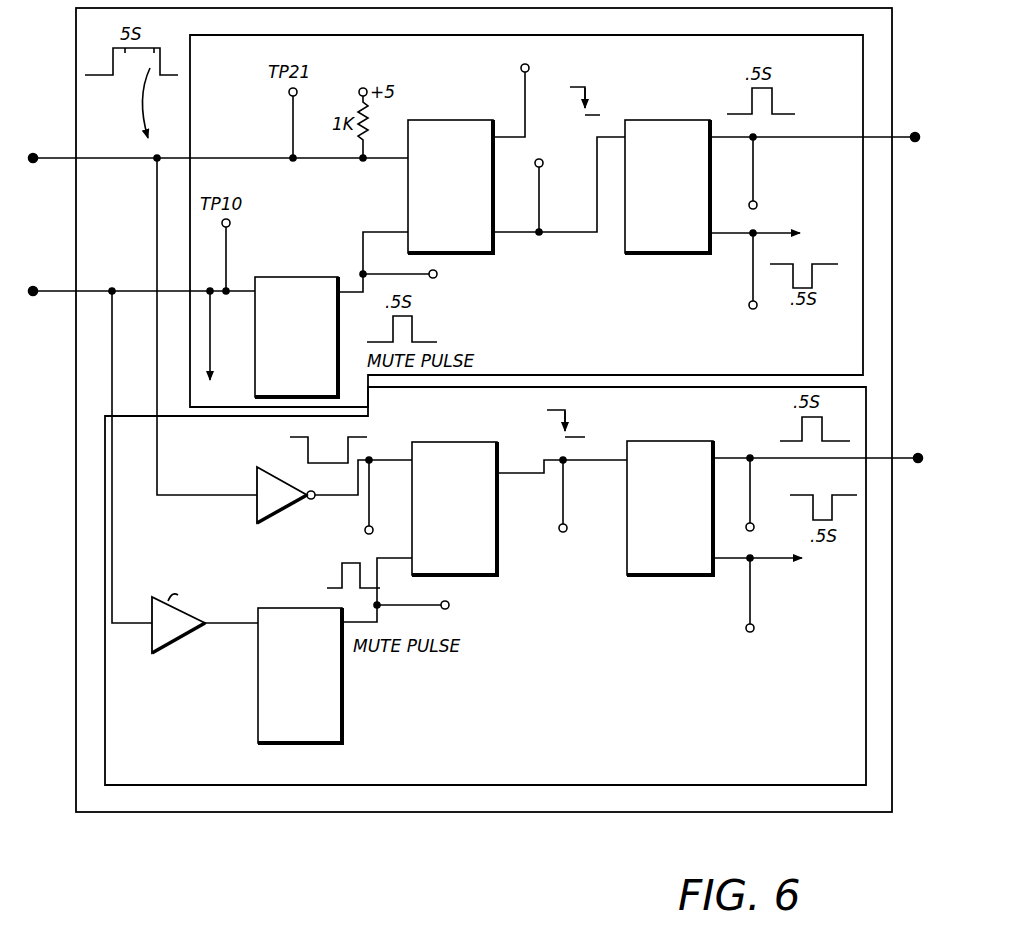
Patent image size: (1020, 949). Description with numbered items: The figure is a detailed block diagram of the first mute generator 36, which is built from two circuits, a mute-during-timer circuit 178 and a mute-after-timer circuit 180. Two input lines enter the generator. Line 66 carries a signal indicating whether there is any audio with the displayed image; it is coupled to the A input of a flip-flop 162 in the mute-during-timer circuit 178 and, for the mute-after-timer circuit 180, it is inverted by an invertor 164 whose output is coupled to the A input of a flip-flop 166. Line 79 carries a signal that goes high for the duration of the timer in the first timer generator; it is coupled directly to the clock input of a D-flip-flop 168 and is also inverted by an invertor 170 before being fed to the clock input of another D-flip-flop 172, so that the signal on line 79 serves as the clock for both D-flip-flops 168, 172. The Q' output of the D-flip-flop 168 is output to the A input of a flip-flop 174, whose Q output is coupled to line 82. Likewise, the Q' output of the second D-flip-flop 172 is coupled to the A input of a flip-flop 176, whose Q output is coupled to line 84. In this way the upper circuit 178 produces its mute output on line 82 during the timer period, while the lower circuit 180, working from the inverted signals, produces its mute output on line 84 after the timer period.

The first mute generator 36 is at (68, 497).
The line 66 is at (108, 278).
The line 79 is at (124, 164).
The line 82 is at (832, 138).
The line 84 is at (764, 456).
The flip-flop 162 is at (310, 277).
The invertor 164 is at (150, 653).
The flip-flop 166 is at (318, 610).
The D-flip-flop 168 is at (466, 102).
The invertor 170 is at (283, 456).
The D-flip-flop 172 is at (498, 532).
The flip-flop 174 is at (664, 96).
The flip-flop 176 is at (616, 505).
The mute-during-timer circuit 178 is at (190, 125).
The mute-after-timer circuit 180 is at (105, 608).